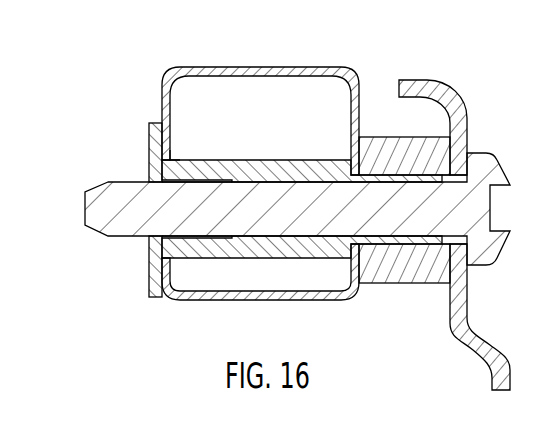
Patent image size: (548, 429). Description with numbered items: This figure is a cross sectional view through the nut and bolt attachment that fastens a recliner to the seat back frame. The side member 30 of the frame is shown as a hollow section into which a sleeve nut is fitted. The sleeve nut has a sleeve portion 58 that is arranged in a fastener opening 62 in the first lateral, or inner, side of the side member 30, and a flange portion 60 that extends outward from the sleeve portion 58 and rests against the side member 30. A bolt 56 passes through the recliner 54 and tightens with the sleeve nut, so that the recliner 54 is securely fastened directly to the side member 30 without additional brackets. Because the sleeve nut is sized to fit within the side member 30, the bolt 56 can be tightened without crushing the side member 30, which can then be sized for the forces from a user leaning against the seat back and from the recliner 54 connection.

The side member 30 is at (262, 67).
The recliner 54 is at (410, 80).
The bolt 56 is at (85, 213).
The sleeve portion 58 is at (311, 160).
The flange portion 60 is at (156, 123).
The fastener opening 62 is at (171, 160).